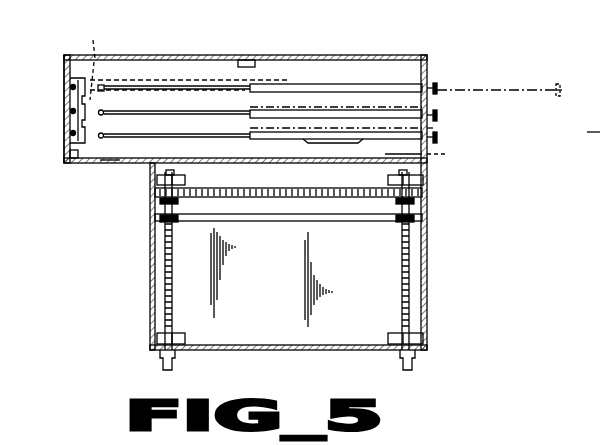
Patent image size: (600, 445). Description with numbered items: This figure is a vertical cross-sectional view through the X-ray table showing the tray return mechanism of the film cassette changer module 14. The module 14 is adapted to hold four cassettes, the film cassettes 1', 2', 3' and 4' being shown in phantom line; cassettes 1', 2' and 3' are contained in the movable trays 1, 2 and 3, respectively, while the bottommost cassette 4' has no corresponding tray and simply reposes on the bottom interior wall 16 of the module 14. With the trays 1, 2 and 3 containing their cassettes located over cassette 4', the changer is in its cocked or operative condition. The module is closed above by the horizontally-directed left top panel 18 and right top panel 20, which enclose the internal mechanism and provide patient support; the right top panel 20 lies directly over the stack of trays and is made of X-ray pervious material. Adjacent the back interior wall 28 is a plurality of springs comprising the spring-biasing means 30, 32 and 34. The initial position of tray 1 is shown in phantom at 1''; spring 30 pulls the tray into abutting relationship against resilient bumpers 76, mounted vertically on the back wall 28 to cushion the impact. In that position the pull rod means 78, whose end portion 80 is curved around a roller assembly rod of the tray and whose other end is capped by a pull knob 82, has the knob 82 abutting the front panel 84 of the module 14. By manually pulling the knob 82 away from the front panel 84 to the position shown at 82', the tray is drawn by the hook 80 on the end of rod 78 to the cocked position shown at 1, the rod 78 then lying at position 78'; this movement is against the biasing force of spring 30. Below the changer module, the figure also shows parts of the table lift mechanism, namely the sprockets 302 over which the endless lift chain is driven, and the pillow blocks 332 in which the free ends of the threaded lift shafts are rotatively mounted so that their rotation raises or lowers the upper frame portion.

The film cassette changer module 14 is at (64, 70).
The bottom interior wall 16 is at (108, 163).
The left top panel 18 is at (150, 56).
The right top panel 20 is at (276, 56).
The back interior wall 28 is at (70, 156).
The spring-biasing means 30 is at (70, 88).
The spring-biasing means 32 is at (70, 111).
The spring-biasing means 34 is at (70, 133).
The bumper 76 is at (74, 78).
The pull rod means 78 is at (190, 60).
The end portion 80 is at (103, 91).
The tray 1 is at (336, 57).
The tray 2 is at (261, 70).
The tray 3 is at (261, 82).
The film cassette 1' is at (301, 52).
The film cassette 2' is at (328, 66).
The film cassette 3' is at (354, 77).
The initial position of tray 1'' is at (90, 61).
The film cassette 4' is at (422, 155).
The pull knob 82 is at (445, 99).
The pull knob position 82' is at (576, 79).
The pull rod position 78' is at (496, 72).
The front panel 84 is at (433, 128).
The sprocket 302 is at (164, 206).
The pillow block 332 is at (186, 180).